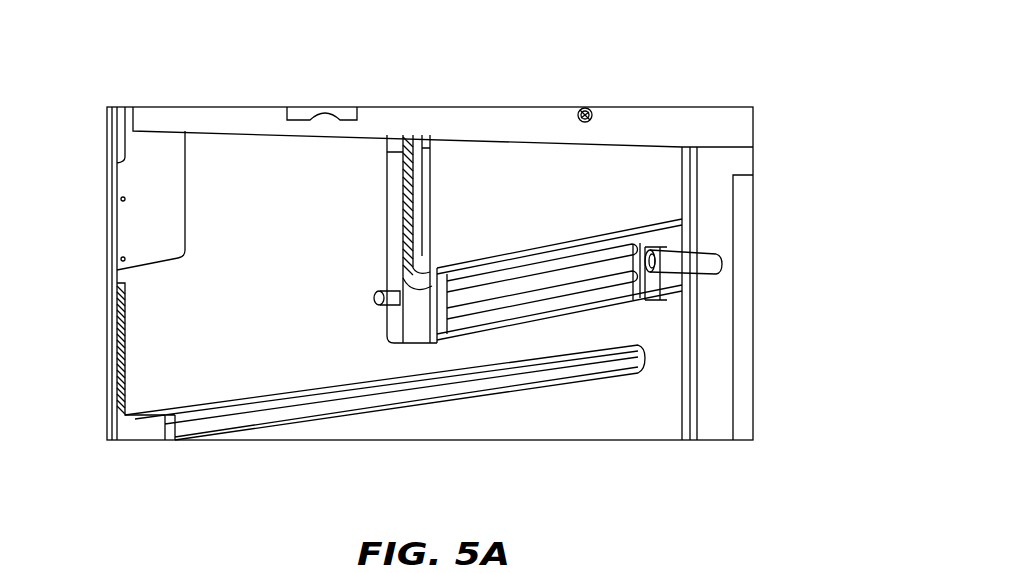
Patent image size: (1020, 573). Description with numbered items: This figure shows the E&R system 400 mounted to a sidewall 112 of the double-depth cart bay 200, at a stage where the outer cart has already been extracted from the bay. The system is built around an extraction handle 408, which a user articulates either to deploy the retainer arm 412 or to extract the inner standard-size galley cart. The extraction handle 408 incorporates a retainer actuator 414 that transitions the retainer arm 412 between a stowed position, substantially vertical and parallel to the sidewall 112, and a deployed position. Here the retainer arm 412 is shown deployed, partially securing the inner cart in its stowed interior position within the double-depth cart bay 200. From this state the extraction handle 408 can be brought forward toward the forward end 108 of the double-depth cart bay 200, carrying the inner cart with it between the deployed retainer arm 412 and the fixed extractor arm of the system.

The double-depth cart bay 200 is at (90, 62).
The forward end 108 is at (107, 277).
The sidewall 112 is at (258, 192).
The extraction handle 408 is at (403, 255).
The E&R system 400 is at (630, 175).
The retainer arm 412 is at (670, 260).
The retainer actuator 414 is at (378, 300).